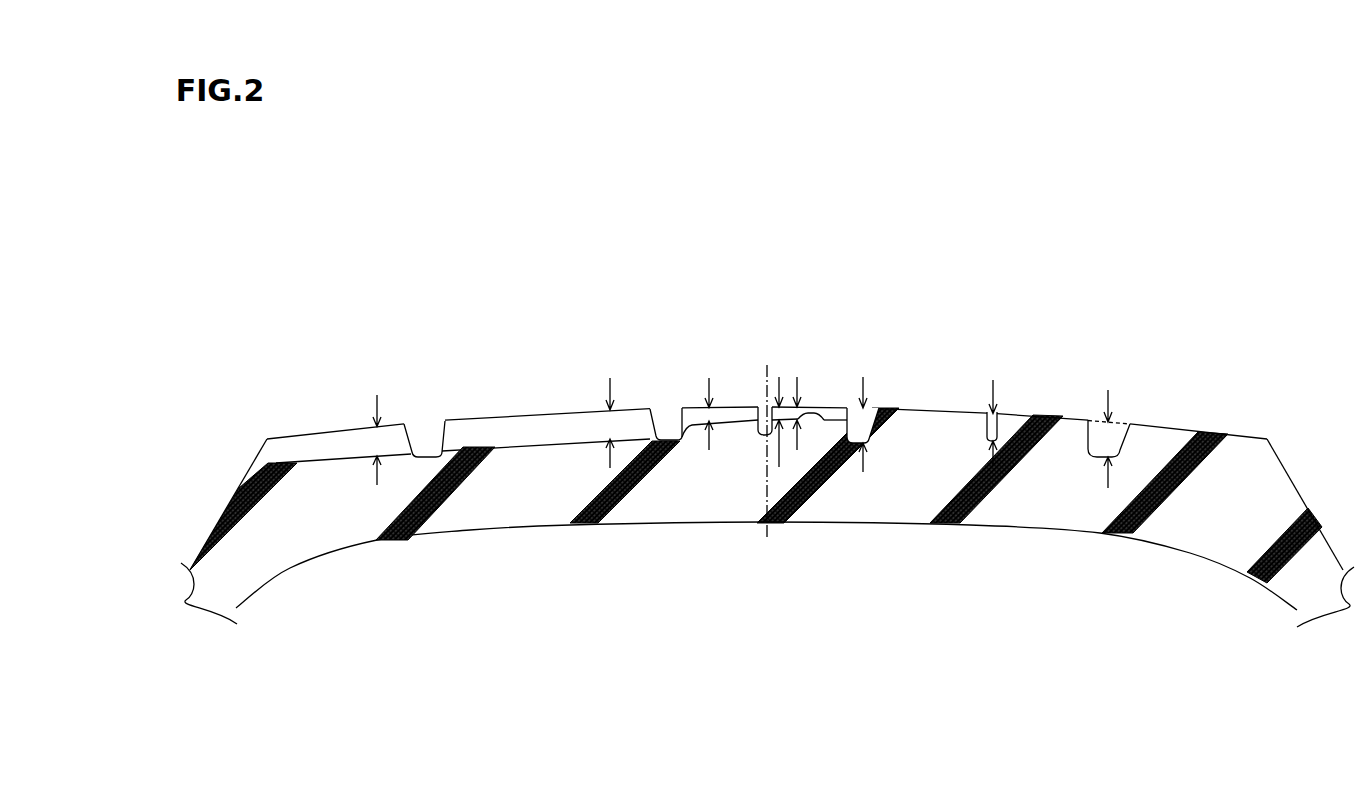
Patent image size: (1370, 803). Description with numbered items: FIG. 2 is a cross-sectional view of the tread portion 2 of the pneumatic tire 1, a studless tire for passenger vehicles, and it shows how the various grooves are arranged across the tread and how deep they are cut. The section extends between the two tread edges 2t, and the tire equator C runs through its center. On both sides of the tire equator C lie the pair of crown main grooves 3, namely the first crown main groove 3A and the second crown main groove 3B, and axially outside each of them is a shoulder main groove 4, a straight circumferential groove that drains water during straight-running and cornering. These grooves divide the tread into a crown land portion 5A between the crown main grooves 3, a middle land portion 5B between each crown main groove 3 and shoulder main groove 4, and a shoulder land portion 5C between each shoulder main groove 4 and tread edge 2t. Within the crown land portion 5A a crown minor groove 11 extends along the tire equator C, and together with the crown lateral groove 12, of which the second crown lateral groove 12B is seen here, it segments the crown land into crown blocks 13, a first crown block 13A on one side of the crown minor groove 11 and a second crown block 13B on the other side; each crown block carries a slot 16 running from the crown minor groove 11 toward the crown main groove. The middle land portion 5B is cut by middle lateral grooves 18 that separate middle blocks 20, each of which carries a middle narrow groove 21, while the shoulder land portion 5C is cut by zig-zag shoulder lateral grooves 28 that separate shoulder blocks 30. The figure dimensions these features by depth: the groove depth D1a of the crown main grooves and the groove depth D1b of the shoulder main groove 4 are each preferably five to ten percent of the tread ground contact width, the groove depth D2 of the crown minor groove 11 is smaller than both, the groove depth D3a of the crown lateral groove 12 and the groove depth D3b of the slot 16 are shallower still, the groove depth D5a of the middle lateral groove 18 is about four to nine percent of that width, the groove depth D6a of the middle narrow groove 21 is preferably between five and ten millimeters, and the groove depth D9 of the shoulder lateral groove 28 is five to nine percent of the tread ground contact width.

The pneumatic tire 1 is at (1284, 326).
The tread portion 2 is at (768, 314).
The tread edge 2t is at (267, 440).
The crown main groove 3 is at (753, 360).
The first crown main groove 3A is at (856, 418).
The second crown main groove 3B is at (663, 422).
The shoulder main groove 4 is at (431, 427).
The crown land portion 5A is at (764, 299).
The middle land portion 5B is at (766, 349).
The shoulder land portion 5C is at (767, 358).
The crown minor groove 11 is at (765, 403).
The crown lateral groove 12 is at (561, 521).
The second crown lateral groove 12B is at (750, 414).
The crown block 13 is at (764, 299).
The first crown block 13A is at (834, 395).
The second crown block 13B is at (729, 395).
The slot 16 is at (813, 414).
The middle lateral groove 18 is at (528, 442).
The middle block 20 is at (556, 400).
The middle narrow groove 21 is at (995, 400).
The shoulder lateral groove 28 is at (340, 460).
The shoulder block 30 is at (351, 408).
The tire equator C is at (767, 441).
The groove depth of crown main groove D1a is at (865, 432).
The groove depth of shoulder main groove D1b is at (1109, 437).
The groove depth of crown minor groove D2 is at (779, 455).
The groove depth of crown lateral groove D3a is at (707, 425).
The groove depth of slot D3b is at (799, 428).
The groove depth of middle lateral groove D5a is at (608, 452).
The groove depth of middle narrow groove D6a is at (996, 432).
The groove depth of shoulder lateral groove D9 is at (377, 472).